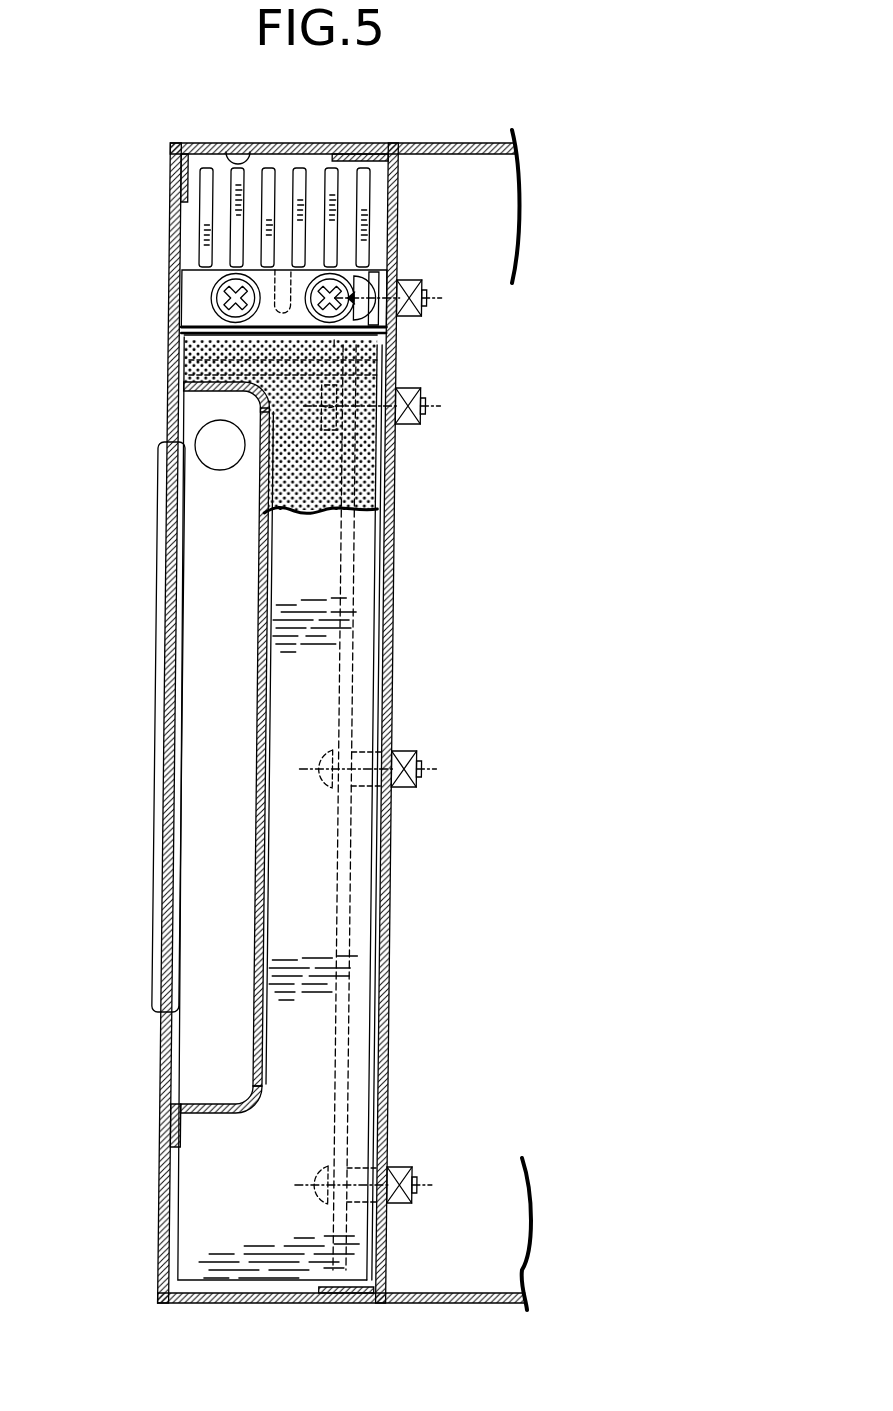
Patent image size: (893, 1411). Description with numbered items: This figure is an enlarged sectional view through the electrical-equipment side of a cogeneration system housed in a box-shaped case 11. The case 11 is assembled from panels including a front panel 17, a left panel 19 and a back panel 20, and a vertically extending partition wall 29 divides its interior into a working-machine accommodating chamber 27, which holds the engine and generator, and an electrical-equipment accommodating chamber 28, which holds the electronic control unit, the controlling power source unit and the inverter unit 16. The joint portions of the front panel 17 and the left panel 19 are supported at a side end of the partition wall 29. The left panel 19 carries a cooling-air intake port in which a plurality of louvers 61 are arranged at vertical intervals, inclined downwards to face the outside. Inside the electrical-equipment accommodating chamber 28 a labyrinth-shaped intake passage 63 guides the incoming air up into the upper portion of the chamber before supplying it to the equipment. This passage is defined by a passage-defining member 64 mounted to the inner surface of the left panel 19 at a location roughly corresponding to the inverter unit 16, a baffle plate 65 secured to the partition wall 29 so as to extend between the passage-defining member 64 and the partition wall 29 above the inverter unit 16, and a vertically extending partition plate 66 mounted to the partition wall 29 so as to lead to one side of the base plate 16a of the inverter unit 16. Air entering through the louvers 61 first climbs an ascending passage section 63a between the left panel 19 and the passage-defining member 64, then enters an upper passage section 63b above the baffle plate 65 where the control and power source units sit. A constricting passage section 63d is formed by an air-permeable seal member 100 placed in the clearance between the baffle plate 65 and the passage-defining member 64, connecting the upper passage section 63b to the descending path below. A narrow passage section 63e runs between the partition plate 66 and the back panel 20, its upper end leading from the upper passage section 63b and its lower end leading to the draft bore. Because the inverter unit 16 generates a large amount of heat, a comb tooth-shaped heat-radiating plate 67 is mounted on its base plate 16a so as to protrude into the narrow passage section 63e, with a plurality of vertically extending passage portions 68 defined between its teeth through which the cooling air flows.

The case 11 is at (156, 1187).
The inverter unit 16 is at (352, 1062).
The base plate 16a is at (181, 372).
The front panel 17 is at (414, 1294).
The left panel 19 is at (163, 1055).
The back panel 20 is at (386, 143).
The working-machine accommodating chamber 27 is at (512, 720).
The electrical-equipment accommodating chamber 28 is at (322, 871).
The partition wall 29 is at (385, 851).
The louvers 61 is at (152, 928).
The labyrinth-shaped intake passage 63 is at (205, 1098).
The ascending passage section 63a is at (244, 766).
The upper passage section 63b is at (330, 1082).
The constricting passage section 63d is at (385, 447).
The narrow passage section 63e is at (251, 150).
The passage-defining member 64 is at (270, 578).
The baffle plate 65 is at (317, 934).
The partition plate 66 is at (195, 333).
The heat-radiating plate 67 is at (368, 215).
The passage portions 68 is at (283, 180).
The air-permeable seal member 100 is at (296, 464).